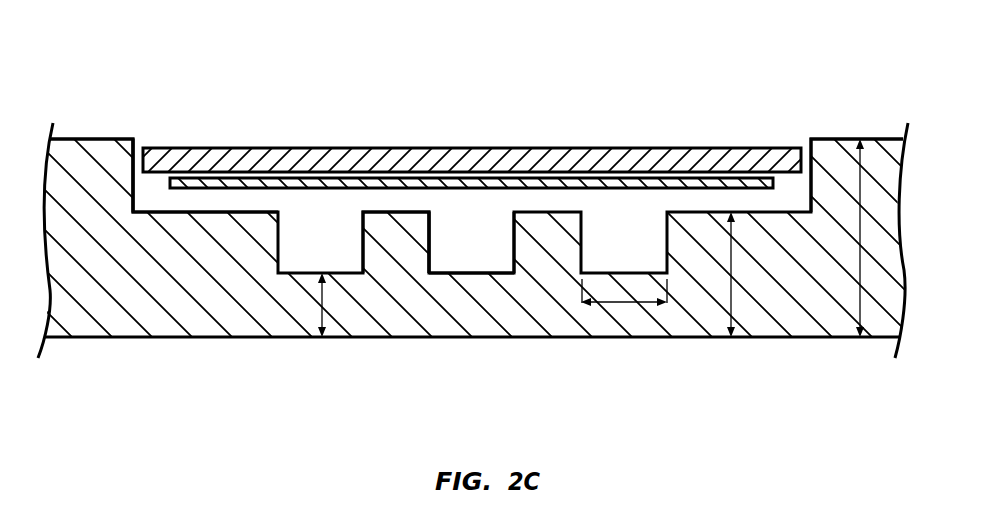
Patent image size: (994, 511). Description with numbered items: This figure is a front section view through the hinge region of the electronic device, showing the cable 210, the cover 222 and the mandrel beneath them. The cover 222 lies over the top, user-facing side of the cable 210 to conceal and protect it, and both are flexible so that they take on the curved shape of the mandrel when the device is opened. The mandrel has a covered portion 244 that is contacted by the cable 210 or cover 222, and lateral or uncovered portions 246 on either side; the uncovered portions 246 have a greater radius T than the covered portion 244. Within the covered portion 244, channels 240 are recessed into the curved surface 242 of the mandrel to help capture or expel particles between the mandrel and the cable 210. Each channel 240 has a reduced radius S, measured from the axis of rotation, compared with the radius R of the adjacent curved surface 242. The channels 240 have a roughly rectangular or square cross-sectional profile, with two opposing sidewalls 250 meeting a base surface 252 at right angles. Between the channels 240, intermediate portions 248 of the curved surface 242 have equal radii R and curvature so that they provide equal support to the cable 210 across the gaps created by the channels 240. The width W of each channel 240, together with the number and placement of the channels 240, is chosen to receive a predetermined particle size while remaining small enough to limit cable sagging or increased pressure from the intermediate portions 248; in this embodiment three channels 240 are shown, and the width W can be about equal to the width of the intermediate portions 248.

The cable 210 is at (133, 85).
The cover 222 is at (563, 148).
The channel 240 is at (296, 272).
The curved surface 242 is at (190, 212).
The covered portion 244 is at (490, 106).
The lateral or uncovered portion 246 is at (84, 134).
The intermediate portion 248 is at (398, 212).
The sidewall 250 is at (430, 237).
The base surface 252 is at (462, 270).
The reduced radius S is at (323, 300).
The width of the channel W is at (630, 302).
The radius of the curved surface R is at (732, 268).
The radius of the uncovered portion T is at (858, 230).